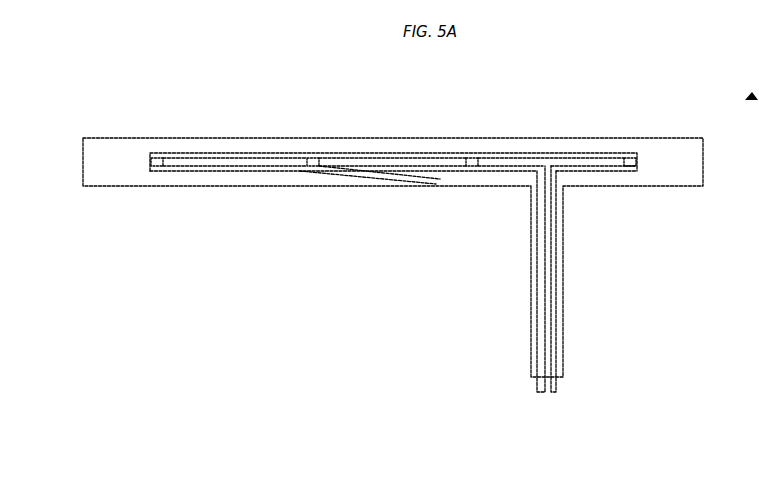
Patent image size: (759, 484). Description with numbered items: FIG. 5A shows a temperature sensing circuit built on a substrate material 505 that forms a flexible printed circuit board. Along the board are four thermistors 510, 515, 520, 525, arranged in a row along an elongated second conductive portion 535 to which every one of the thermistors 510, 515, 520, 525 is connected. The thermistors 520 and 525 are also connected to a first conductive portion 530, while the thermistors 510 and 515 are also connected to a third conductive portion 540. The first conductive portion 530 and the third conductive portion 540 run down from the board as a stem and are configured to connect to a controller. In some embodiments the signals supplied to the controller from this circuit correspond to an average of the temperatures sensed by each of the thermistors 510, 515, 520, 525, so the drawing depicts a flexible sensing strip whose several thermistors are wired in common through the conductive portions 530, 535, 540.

The substrate material 505 is at (400, 138).
The second conductive portion 535 is at (232, 153).
The thermistor 510 is at (152, 160).
The thermistor 515 is at (313, 162).
The thermistor 520 is at (470, 162).
The thermistor 525 is at (632, 162).
The first conductive portion 530 is at (558, 383).
The third conductive portion 540 is at (538, 383).